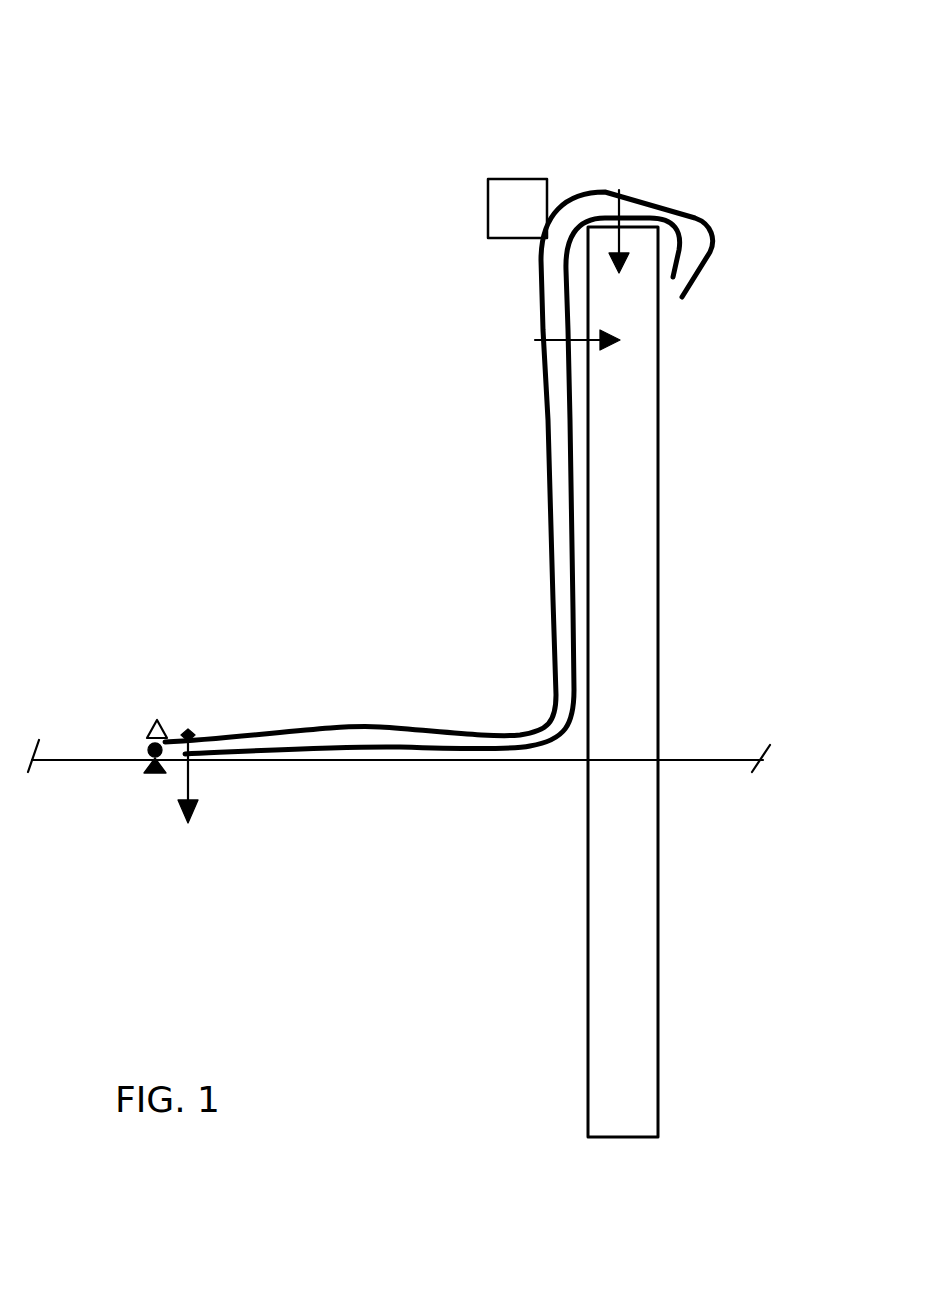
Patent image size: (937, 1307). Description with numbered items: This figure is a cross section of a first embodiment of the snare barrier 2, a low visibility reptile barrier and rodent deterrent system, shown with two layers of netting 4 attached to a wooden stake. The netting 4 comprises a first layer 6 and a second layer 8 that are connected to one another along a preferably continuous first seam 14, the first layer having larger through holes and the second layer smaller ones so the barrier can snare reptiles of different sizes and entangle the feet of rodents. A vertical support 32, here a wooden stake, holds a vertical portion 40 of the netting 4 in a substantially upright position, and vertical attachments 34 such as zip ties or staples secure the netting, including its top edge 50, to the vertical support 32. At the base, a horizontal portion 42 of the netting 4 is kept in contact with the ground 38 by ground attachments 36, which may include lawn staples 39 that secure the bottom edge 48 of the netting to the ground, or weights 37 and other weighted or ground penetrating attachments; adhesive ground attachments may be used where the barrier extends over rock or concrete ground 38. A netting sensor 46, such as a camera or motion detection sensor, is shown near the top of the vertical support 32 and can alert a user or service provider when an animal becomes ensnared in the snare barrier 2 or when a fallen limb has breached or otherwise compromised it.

The snare barrier 2 is at (217, 122).
The netting 4 is at (265, 340).
The first layer 6 is at (543, 418).
The second layer 8 is at (575, 623).
The first seam 14 is at (150, 746).
The vertical support 32 is at (633, 530).
The vertical attachments 34 is at (620, 188).
The ground attachments 36 is at (249, 737).
The weights 37 is at (163, 727).
The ground 38 is at (82, 760).
The lawn staples 39 is at (192, 782).
The vertical portion 40 is at (463, 473).
The horizontal portion 42 is at (347, 713).
The netting sensor 46 is at (495, 179).
The bottom edge 48 is at (155, 765).
The top edge 50 is at (673, 270).